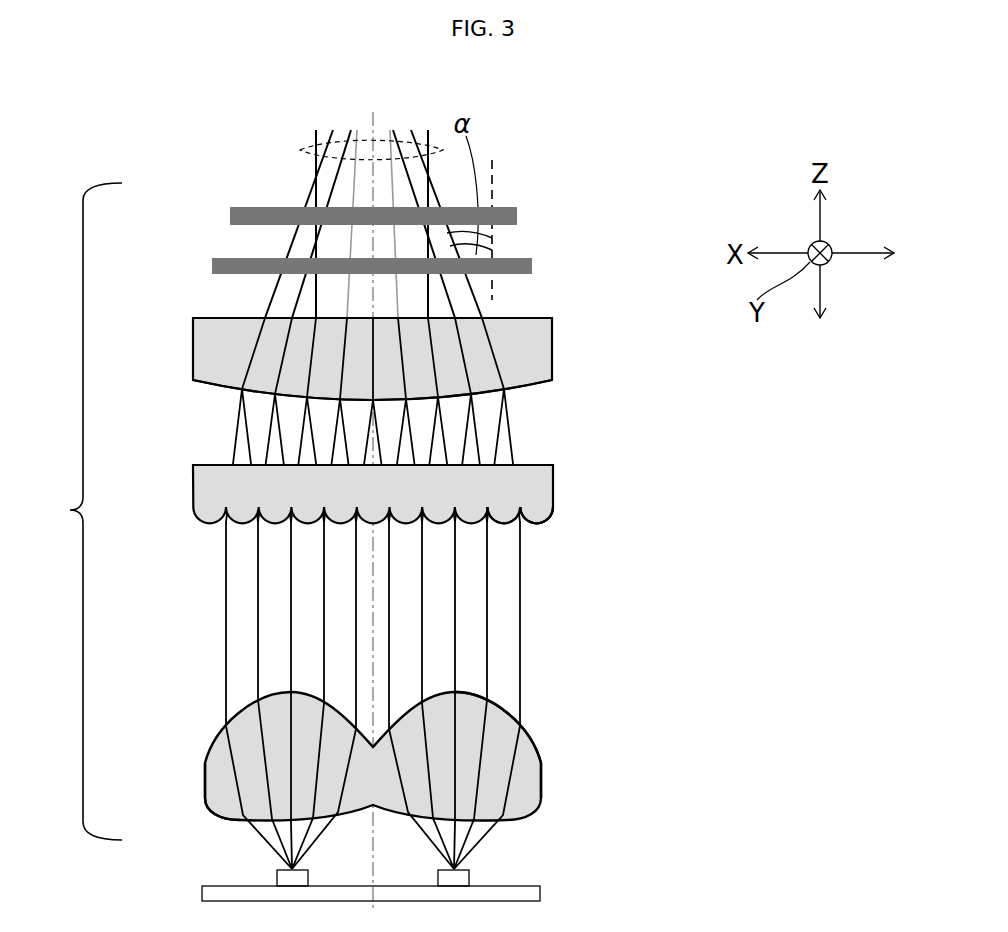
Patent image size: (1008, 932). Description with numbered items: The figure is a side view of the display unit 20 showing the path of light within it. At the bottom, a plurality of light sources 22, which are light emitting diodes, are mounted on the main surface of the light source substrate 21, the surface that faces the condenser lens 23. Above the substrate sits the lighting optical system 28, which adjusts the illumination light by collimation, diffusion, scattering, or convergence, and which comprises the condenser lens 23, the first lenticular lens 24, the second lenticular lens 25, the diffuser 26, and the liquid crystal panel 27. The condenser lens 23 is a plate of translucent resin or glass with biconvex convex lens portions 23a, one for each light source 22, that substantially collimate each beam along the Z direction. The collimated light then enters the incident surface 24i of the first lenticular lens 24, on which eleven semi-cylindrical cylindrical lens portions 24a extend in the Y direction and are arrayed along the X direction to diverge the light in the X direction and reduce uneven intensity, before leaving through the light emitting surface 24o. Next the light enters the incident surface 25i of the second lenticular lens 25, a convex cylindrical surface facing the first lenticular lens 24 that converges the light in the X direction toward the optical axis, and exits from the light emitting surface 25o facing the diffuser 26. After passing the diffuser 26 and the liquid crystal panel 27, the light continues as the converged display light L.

The display unit 20 is at (623, 148).
The light source substrate 21 is at (543, 893).
The light source 22 is at (277, 880).
The condenser lens 23 is at (540, 745).
The convex lens portion 23a is at (220, 782).
The first lenticular lens 24 is at (557, 480).
The light emitting surface 24o is at (540, 465).
The incident surface 24i is at (547, 524).
The cylindrical lens portion 24a is at (536, 522).
The second lenticular lens 25 is at (556, 336).
The light emitting surface 25o is at (198, 318).
The incident surface 25i is at (212, 386).
The diffuser 26 is at (536, 263).
The liquid crystal panel 27 is at (522, 214).
The lighting optical system 28 is at (76, 511).
The display light L is at (300, 150).